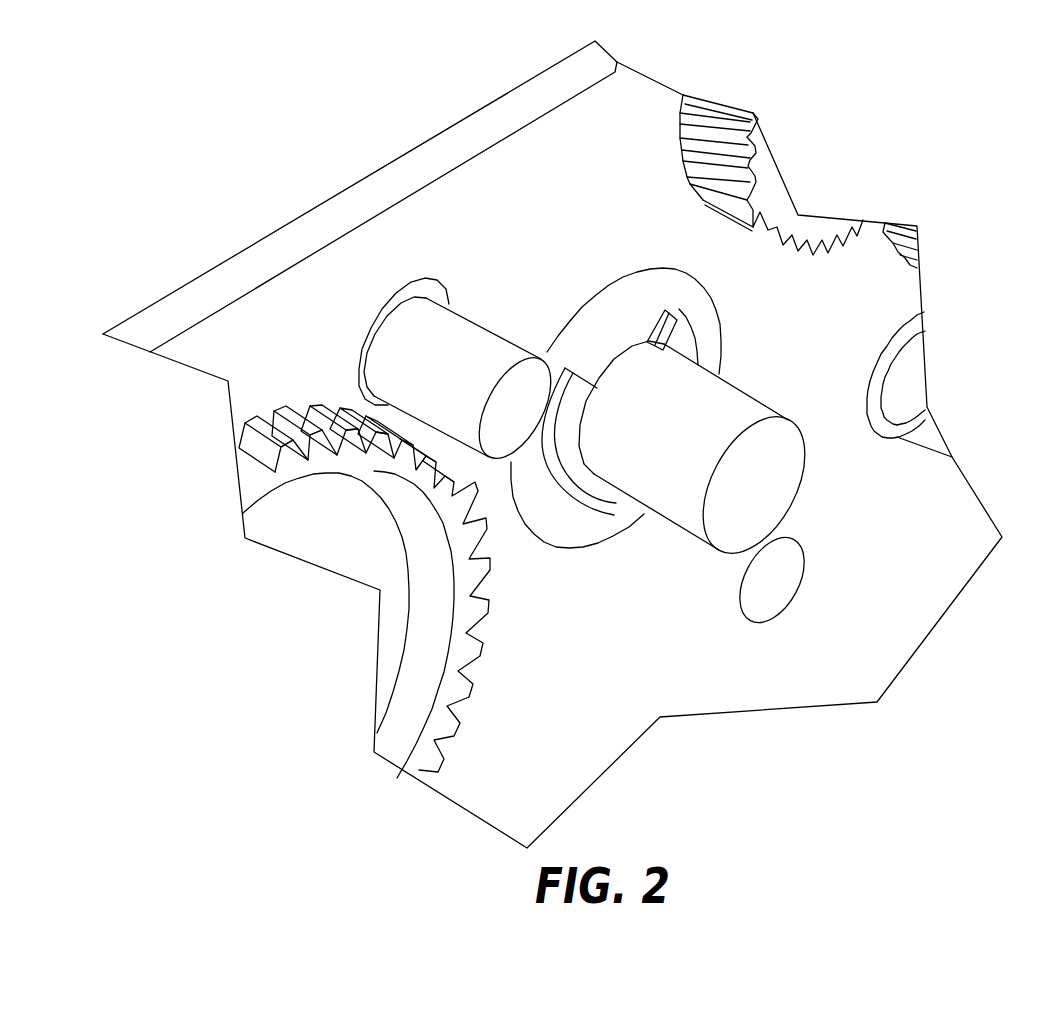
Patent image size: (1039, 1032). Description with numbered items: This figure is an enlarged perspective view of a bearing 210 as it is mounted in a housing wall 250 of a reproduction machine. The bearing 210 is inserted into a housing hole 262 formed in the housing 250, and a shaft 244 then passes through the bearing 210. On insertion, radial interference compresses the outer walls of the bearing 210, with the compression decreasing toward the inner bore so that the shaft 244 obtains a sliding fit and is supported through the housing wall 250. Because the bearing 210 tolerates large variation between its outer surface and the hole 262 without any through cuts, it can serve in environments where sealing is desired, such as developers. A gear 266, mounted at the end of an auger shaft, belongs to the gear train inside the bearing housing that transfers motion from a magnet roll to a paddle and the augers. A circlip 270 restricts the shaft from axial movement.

The housing wall 250 is at (350, 248).
The gear 266 is at (335, 487).
The housing hole 262 is at (708, 297).
The bearing 210 is at (717, 346).
The circlip 270 is at (582, 499).
The shaft 244 is at (727, 545).